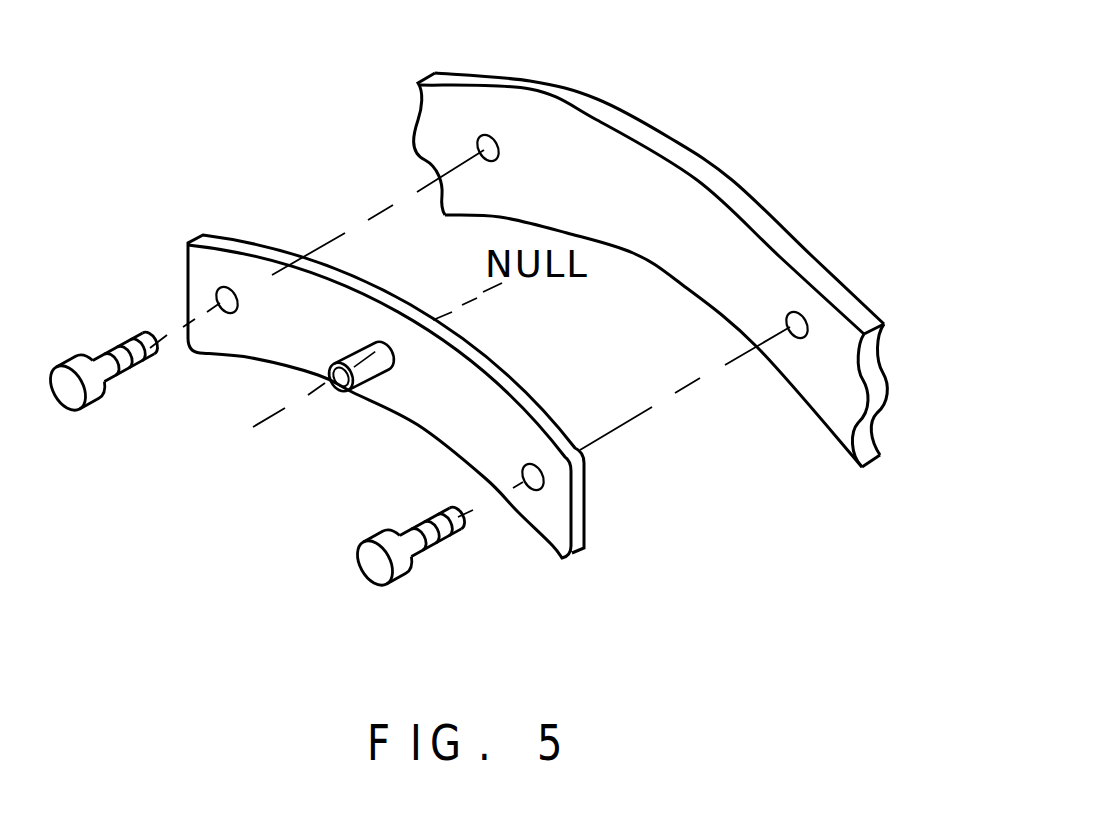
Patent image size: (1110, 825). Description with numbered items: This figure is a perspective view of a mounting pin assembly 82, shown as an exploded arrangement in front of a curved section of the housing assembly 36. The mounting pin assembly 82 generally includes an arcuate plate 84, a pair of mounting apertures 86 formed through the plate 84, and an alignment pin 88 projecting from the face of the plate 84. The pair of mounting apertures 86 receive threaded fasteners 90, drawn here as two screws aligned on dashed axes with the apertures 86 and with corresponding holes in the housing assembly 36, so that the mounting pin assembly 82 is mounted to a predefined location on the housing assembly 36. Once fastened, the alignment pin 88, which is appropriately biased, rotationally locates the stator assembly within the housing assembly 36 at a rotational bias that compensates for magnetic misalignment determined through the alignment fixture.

The housing assembly 36 is at (756, 193).
The mounting pin assembly 82 is at (136, 222).
The plate 84 is at (585, 552).
The mounting apertures 86 is at (218, 296).
The alignment pin 88 is at (378, 388).
The threaded fasteners 90 is at (358, 552).